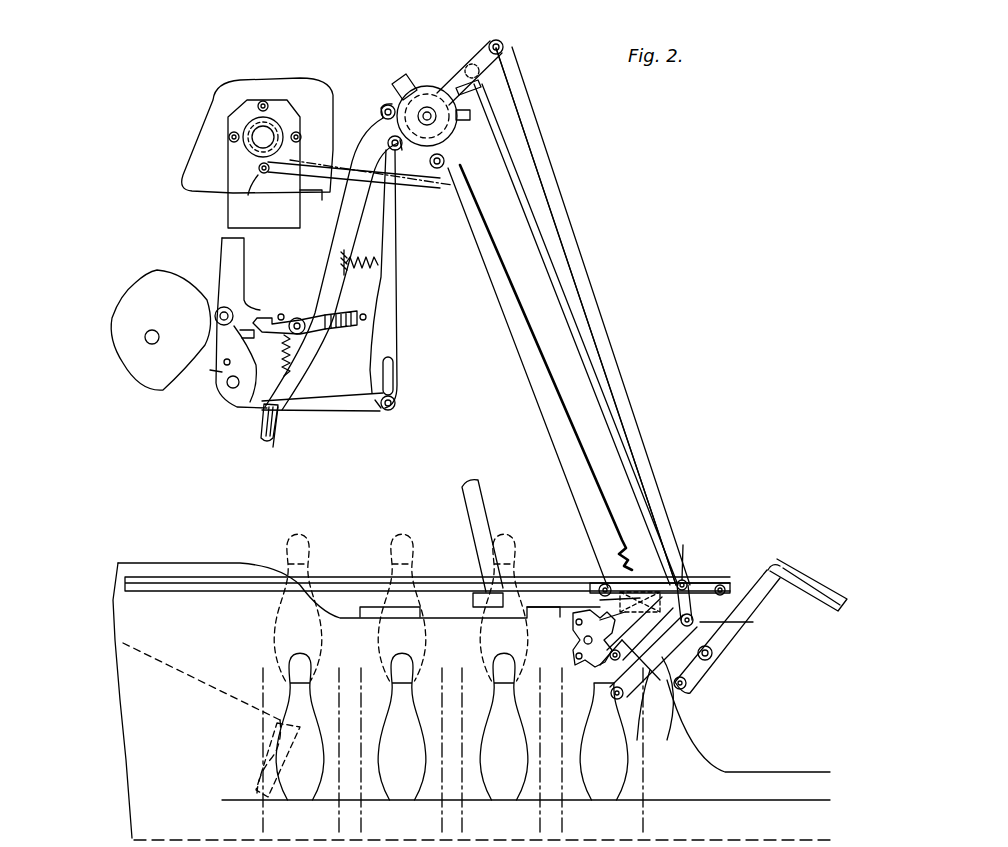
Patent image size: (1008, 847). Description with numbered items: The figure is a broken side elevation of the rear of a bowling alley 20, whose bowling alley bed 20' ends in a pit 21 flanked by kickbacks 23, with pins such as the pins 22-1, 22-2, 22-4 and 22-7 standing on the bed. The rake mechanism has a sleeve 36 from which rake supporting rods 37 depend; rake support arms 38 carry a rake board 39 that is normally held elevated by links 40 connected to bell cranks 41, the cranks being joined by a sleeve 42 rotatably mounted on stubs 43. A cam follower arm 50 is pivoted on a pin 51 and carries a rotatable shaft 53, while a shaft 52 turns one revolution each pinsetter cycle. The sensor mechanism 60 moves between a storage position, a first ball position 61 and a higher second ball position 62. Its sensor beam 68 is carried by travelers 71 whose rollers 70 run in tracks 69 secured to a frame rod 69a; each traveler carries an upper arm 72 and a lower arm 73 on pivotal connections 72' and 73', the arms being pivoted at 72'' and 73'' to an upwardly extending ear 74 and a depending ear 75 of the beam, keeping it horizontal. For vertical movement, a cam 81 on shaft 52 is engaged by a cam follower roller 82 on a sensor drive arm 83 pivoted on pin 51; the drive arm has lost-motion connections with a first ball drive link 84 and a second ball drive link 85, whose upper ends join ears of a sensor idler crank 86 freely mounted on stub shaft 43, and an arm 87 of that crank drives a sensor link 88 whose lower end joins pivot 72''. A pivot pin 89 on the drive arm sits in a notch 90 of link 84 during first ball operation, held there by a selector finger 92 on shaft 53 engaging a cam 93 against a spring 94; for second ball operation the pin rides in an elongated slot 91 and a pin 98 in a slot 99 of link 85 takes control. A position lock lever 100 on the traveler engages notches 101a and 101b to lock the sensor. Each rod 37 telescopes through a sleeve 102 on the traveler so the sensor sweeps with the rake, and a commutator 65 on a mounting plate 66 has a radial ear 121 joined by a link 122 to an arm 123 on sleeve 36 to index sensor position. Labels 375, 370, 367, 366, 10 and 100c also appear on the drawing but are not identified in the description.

The commutator 65 is at (247, 120).
The mounting plate 66 is at (217, 127).
The radial ear 121 is at (261, 195).
The link 122 is at (354, 192).
The arm 123 is at (453, 178).
The bell cranks 41 is at (407, 80).
The sleeve 42 is at (425, 103).
The arm 87 is at (504, 46).
The stubs 43 is at (462, 96).
The sensor idler crank 86 is at (470, 116).
The sensor link 88 is at (612, 367).
The rollers 70 is at (580, 350).
The sleeve 36 is at (528, 133).
The rake supporting rods 37 is at (483, 235).
The second ball drive link 85 is at (347, 213).
The first ball drive link 84 is at (383, 281).
The spring 94 is at (378, 260).
The cam 93 is at (366, 317).
The shaft 53 is at (296, 320).
The drive link selector finger 92 is at (306, 331).
The arm pin 375 is at (258, 318).
The tension spring 370 is at (293, 355).
The elongated slot 91 is at (393, 375).
The pivot pin 89 is at (395, 406).
The notch 90 is at (377, 406).
The sensor drive arm 83 is at (307, 410).
The cam follower arm 50 is at (227, 248).
The cam follower roller 82 is at (218, 300).
The lever hole 367 is at (224, 366).
The lever pin 366 is at (234, 389).
The pin 51 is at (230, 392).
The cam 81 is at (157, 290).
The shaft 52 is at (144, 333).
The slot 99 is at (263, 427).
The pin 98 is at (277, 437).
The pinsetter frame rod 69a is at (470, 503).
The tracks 69 is at (505, 598).
The kickbacks 23 is at (247, 623).
The pit 21 is at (422, 752).
The rake support arms 38 is at (223, 687).
The rake board 39 is at (268, 762).
The bowling pin 22-7 is at (296, 534).
The bowling pin 22-4 is at (510, 545).
The bowling pin 22-2 is at (505, 790).
The bowling pin 22-1 is at (605, 790).
The bowling alley bed 20' is at (718, 817).
The bowling alley 20 is at (778, 733).
The first ball position 61 is at (753, 713).
The second ball position 62 is at (753, 622).
The sensor mechanism 60 is at (700, 580).
The pivot 72'' is at (699, 546).
The ear 74 is at (660, 569).
The sensor beam 68 is at (700, 590).
The pivot pin 10 is at (601, 583).
The ear 75 is at (695, 614).
The pivotal connection 73'' is at (729, 649).
The links 40 is at (708, 660).
The lower arm 73 is at (646, 679).
The pivotal connection 73' is at (614, 683).
The sleeve 102 is at (645, 700).
The traveler 71 is at (600, 668).
The upper arm 72 is at (578, 650).
The pivotal connection 72' is at (566, 643).
The notch 101a is at (576, 657).
The notch 101b is at (576, 624).
The stop step 100c is at (590, 610).
The position lock lever 100 is at (652, 590).